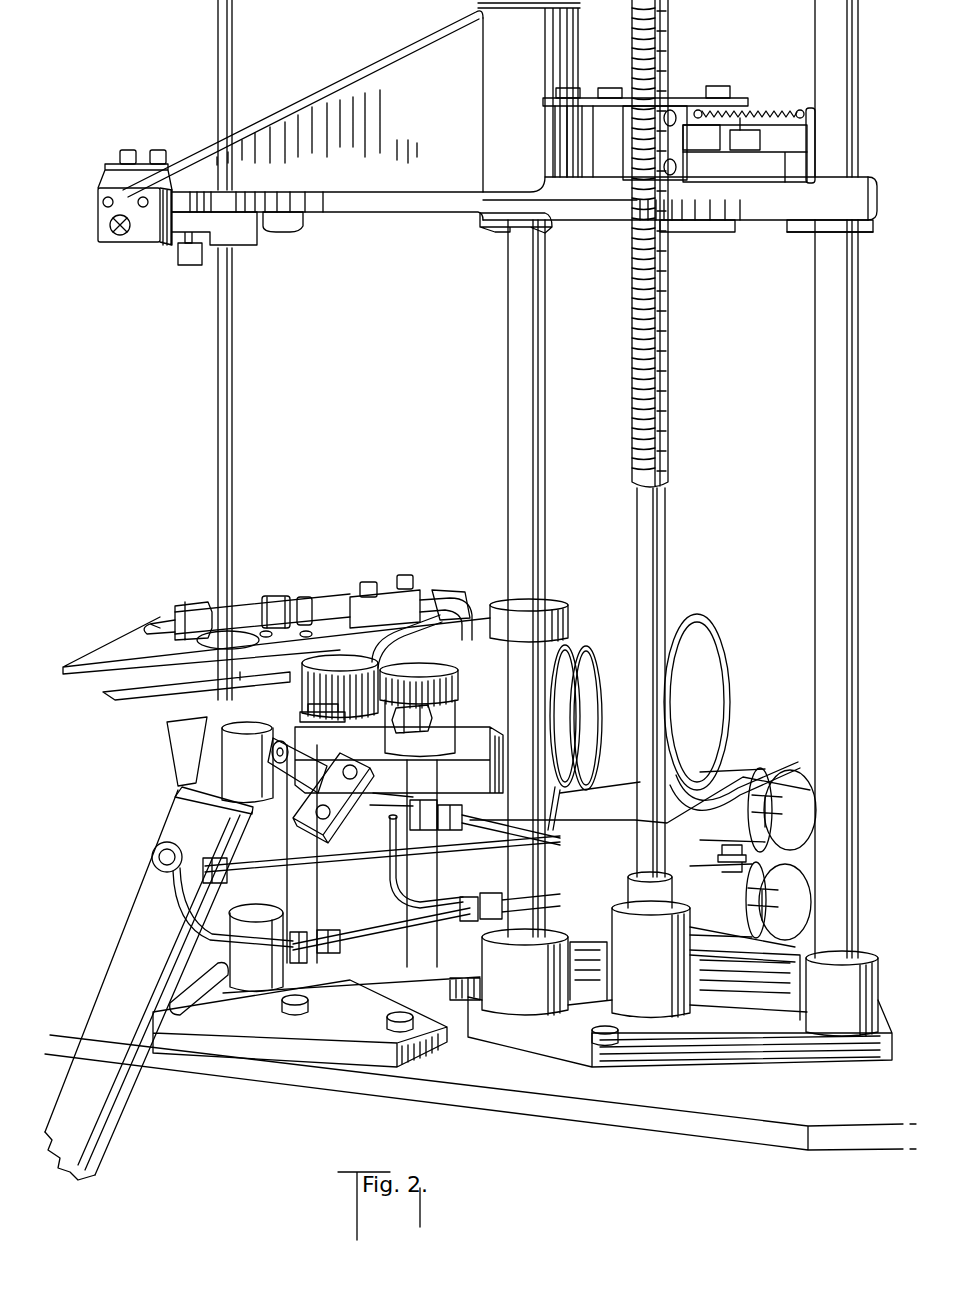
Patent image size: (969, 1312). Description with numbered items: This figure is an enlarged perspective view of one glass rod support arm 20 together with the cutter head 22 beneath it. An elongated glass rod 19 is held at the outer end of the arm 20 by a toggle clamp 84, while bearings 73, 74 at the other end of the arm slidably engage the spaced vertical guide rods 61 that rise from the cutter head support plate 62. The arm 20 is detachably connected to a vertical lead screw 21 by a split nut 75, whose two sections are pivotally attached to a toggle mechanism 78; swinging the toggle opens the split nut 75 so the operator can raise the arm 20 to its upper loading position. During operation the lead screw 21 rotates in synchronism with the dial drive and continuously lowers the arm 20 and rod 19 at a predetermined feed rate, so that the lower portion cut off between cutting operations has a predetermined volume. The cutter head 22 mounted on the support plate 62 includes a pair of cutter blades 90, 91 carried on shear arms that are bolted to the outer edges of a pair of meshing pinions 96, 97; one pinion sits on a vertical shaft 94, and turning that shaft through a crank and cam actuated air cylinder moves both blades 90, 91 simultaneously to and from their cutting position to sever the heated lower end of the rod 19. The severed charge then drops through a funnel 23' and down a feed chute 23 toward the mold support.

The glass rod 19 is at (231, 413).
The rod support arm 20 is at (425, 136).
The lead screw 21 is at (665, 387).
The cutter head 22 is at (429, 572).
The feed chute 23 is at (148, 985).
The funnel 23' is at (208, 854).
The guide rod 61 is at (850, 318).
The cutter head support plate 62 is at (806, 1104).
The bearing 73 is at (870, 226).
The bearing 74 is at (545, 77).
The split nut 75 is at (690, 112).
The toggle mechanism 78 is at (770, 195).
The toggle clamp 84 is at (176, 278).
The cutter blade 90 is at (296, 720).
The cutter blade 91 is at (113, 703).
The vertical shaft 94 is at (417, 835).
The pinion 96 is at (440, 680).
The pinion 97 is at (327, 662).